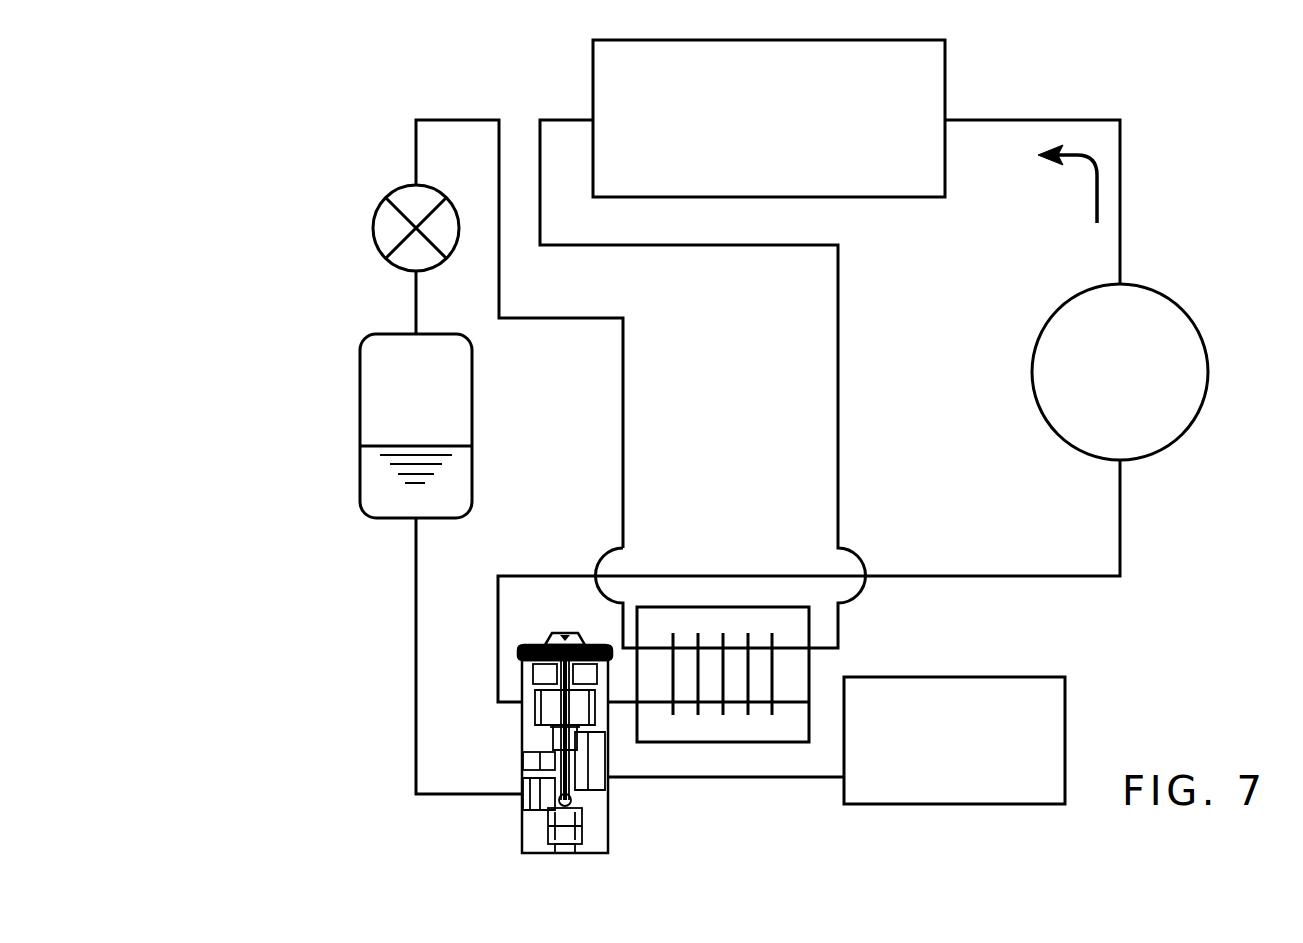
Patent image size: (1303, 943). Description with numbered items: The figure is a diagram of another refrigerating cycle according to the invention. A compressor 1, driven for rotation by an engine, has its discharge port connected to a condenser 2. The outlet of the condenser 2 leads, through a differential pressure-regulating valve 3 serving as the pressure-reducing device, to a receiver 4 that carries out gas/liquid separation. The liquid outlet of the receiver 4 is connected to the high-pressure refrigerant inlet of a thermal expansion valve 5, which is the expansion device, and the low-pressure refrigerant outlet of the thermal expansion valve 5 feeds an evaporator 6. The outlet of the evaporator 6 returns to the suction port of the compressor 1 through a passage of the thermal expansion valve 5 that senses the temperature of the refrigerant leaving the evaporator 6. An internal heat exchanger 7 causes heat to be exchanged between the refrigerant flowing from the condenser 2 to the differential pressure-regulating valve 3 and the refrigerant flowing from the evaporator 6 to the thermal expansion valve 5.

The compressor 1 is at (1190, 318).
The condenser 2 is at (945, 70).
The differential pressure-regulating valve 3 is at (380, 212).
The receiver 4 is at (472, 446).
The thermal expansion valve 5 is at (608, 832).
The evaporator 6 is at (1066, 712).
The internal heat exchanger 7 is at (725, 607).